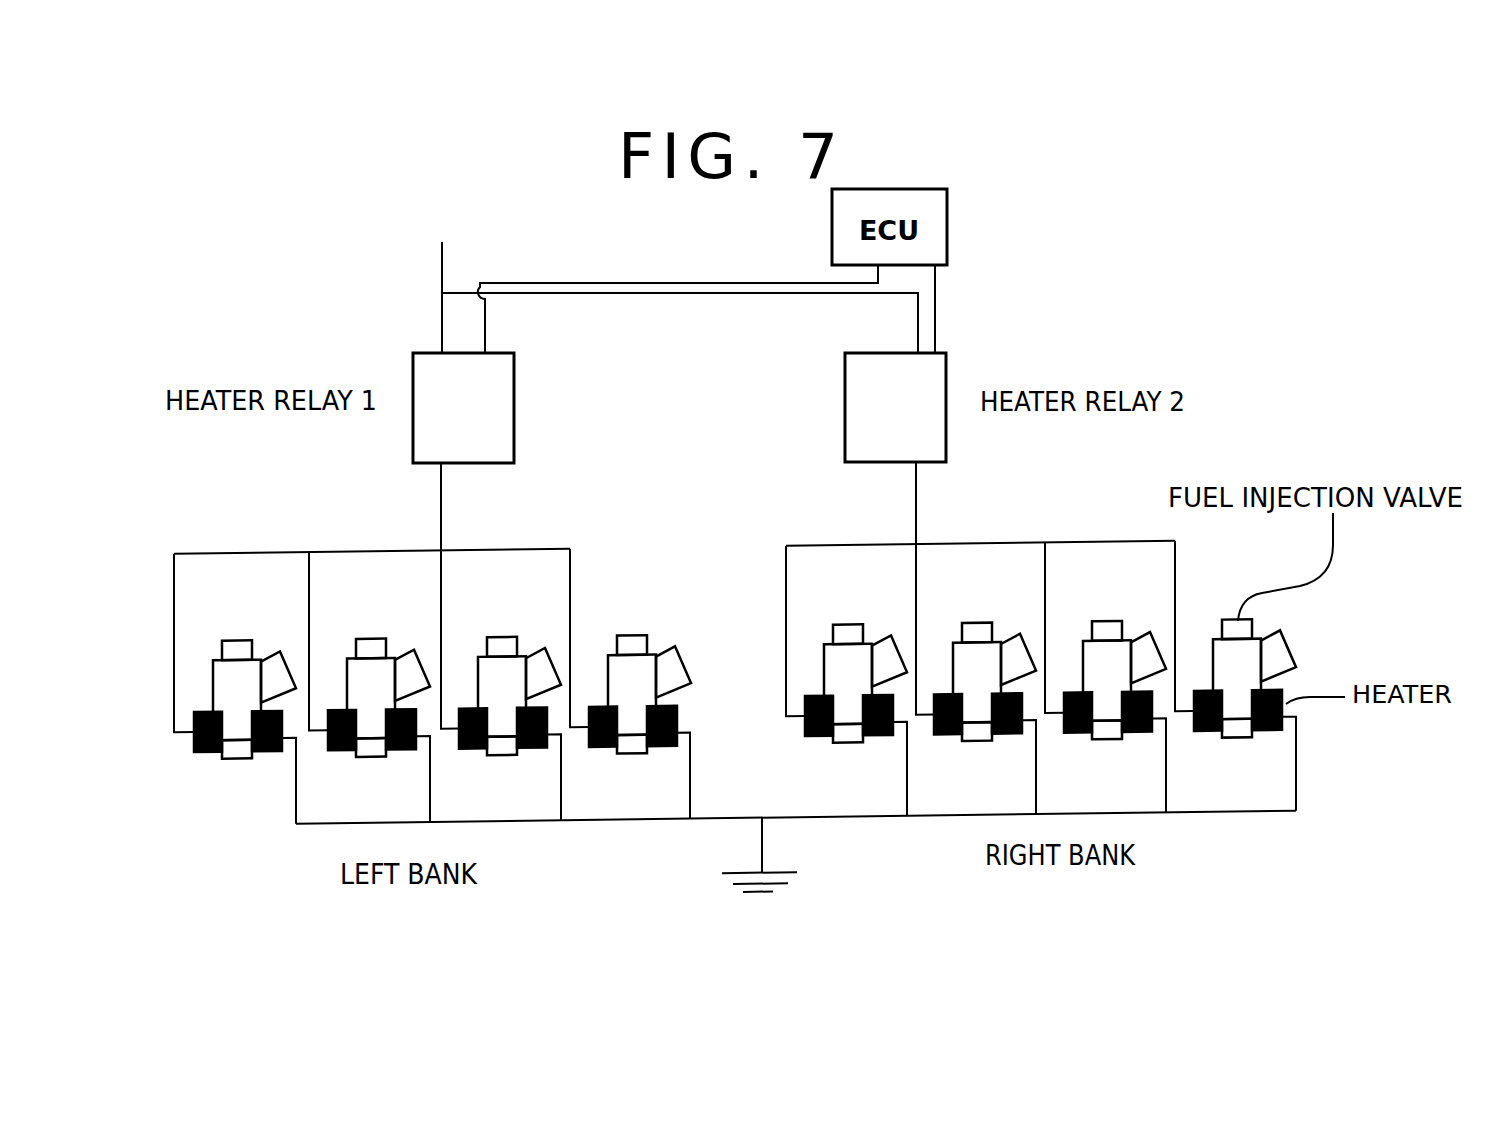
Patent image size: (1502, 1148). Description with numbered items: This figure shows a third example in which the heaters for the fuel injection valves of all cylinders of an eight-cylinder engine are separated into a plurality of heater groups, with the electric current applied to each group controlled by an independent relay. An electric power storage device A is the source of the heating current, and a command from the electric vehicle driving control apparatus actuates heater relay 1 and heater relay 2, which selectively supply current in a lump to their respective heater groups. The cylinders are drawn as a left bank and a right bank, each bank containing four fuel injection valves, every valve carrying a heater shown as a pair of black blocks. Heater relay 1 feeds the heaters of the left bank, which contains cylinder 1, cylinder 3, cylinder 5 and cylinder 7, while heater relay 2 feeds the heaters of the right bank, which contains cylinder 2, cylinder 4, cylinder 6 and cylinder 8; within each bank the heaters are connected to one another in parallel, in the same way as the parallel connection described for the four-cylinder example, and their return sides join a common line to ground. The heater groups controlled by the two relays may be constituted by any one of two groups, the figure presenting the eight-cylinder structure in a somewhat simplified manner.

The electric power storage device A is at (440, 277).
The heater relay 1 is at (235, 688).
The heater relay 2 is at (846, 680).
The fuel injection valve of cylinder #3 with heater 3 is at (369, 686).
The fuel injection valve of cylinder #4 with heater 4 is at (976, 679).
The fuel injection valve of cylinder #5 with heater 5 is at (501, 685).
The fuel injection valve of cylinder #6 with heater 6 is at (1105, 677).
The fuel injection valve of cylinder #7 with heater 7 is at (630, 683).
The fuel injection valve of cylinder #8 with heater 8 is at (1235, 675).